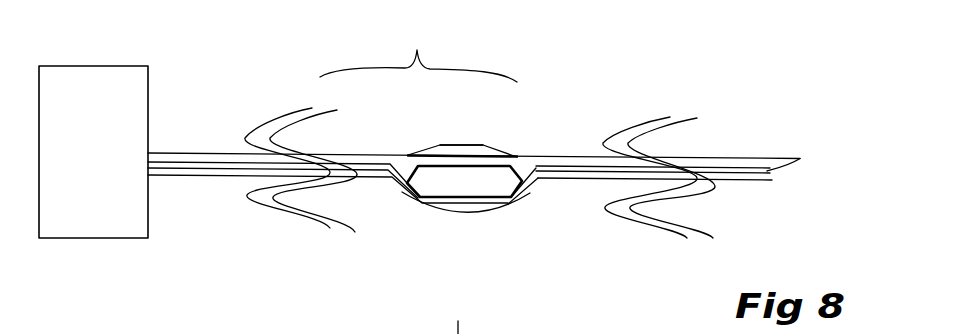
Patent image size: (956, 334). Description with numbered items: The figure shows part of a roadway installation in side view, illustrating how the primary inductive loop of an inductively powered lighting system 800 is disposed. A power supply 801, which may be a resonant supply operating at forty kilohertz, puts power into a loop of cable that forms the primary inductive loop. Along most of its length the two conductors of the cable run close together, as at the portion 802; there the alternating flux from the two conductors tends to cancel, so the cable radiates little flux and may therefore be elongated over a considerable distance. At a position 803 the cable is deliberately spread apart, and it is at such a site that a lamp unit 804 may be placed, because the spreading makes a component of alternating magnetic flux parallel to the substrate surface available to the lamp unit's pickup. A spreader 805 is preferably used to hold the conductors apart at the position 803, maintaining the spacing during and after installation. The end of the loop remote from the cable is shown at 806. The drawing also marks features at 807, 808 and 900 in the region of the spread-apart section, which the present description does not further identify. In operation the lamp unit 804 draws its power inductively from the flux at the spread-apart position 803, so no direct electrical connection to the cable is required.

The optical probe assembly 800 is at (418, 47).
The power supply 801 is at (148, 66).
The close-together conductor portion of the primary loop cable 802 is at (188, 148).
The spread-apart position of the primary inductive loop 803 is at (787, 130).
The lamp unit 804 is at (768, 172).
The spreader 805 is at (512, 190).
The end of the loop remote from the cable 806 is at (490, 146).
The lens element 807 is at (408, 157).
The internal chamber 808 is at (440, 182).
The section reference 900 is at (456, 311).